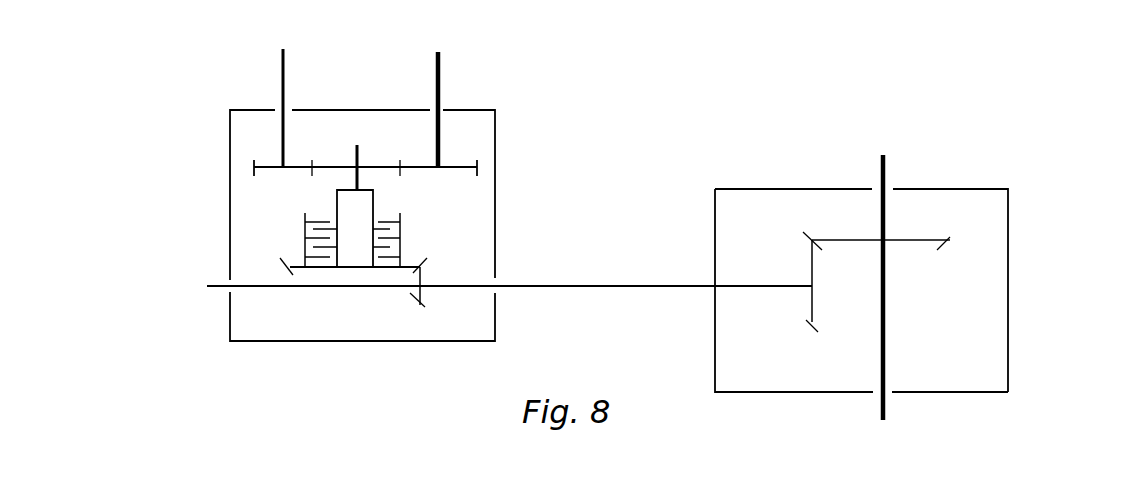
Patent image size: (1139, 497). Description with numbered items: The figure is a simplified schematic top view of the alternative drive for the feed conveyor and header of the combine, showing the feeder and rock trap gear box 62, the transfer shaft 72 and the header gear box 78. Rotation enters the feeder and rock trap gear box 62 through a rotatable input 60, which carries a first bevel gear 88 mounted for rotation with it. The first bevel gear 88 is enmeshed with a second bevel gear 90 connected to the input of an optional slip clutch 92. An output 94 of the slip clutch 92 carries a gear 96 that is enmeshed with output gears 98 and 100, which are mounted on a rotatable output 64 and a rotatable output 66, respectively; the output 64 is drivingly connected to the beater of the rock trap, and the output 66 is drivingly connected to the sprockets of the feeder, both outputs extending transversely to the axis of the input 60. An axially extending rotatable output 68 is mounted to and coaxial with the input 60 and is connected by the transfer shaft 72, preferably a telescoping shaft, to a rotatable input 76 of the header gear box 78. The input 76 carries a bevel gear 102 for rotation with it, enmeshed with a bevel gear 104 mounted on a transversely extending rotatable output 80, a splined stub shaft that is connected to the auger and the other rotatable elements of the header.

The rotatable input 60 is at (222, 287).
The feeder and rock trap gear box 62 is at (473, 344).
The rotatable output 64 is at (280, 63).
The rotatable output 66 is at (442, 65).
The rotatable output 68 is at (513, 283).
The transfer shaft 72 is at (585, 283).
The rotatable input 76 is at (757, 285).
The header gear box 78 is at (1012, 367).
The rotatable output 80 is at (881, 169).
The first bevel gear 88 is at (412, 300).
The second bevel gear 90 is at (290, 262).
The slip clutch 92 is at (400, 231).
The output 94 is at (360, 187).
The gear 96 is at (330, 166).
The output gear 98 is at (254, 162).
The output gear 100 is at (477, 167).
The bevel gear 102 is at (810, 326).
The bevel gear 104 is at (967, 228).